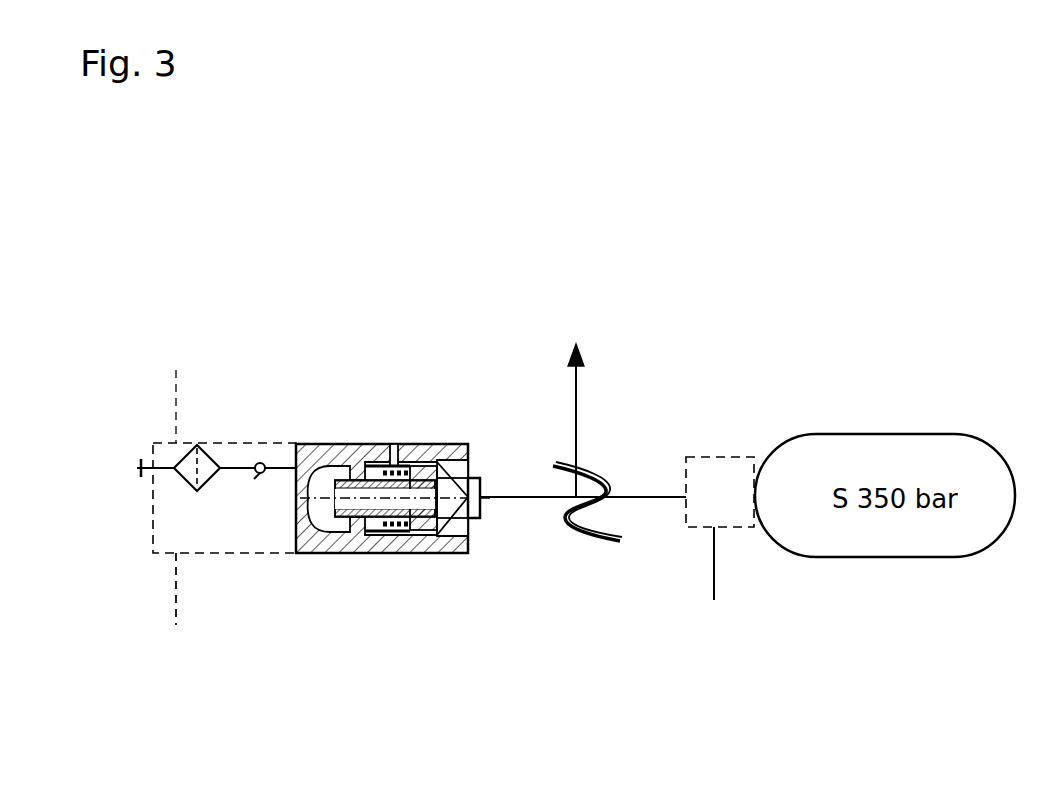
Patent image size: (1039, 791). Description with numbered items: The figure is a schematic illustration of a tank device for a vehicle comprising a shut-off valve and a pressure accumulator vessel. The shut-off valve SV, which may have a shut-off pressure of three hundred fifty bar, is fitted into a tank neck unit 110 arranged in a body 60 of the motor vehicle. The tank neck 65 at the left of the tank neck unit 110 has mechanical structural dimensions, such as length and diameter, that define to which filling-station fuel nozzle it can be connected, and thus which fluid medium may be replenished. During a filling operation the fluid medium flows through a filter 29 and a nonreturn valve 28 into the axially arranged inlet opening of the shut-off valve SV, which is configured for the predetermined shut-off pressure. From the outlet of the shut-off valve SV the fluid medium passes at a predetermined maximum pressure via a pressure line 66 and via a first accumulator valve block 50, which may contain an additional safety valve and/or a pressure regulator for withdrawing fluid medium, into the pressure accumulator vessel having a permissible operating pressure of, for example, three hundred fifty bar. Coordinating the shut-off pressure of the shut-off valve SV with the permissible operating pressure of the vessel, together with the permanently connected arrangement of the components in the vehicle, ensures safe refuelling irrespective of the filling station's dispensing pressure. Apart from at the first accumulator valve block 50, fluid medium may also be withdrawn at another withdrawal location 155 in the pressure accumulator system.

The tank neck 65 is at (137, 467).
The filter 29 is at (215, 456).
The nonreturn valve 28 is at (262, 456).
The tank neck unit 110 is at (256, 556).
The body 60 is at (175, 594).
The pressure line 66 is at (525, 503).
The first accumulator valve block 50 is at (714, 457).
The withdrawal location 155 is at (713, 578).
The shut-off valve SV is at (349, 443).